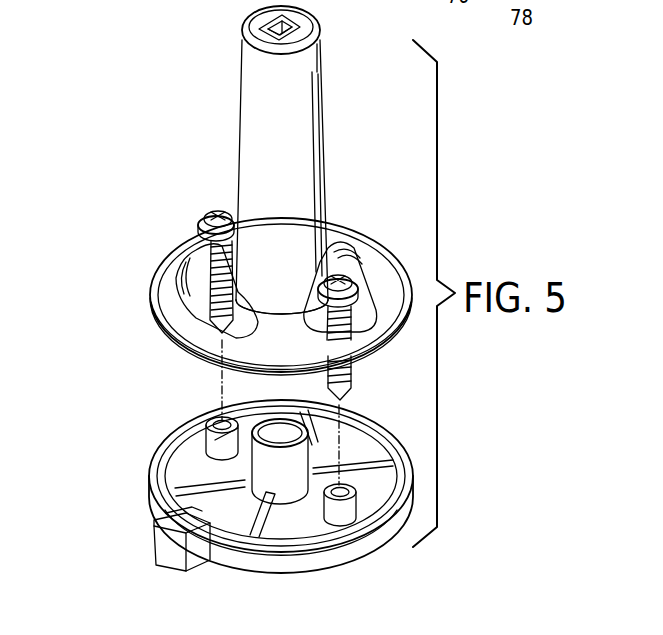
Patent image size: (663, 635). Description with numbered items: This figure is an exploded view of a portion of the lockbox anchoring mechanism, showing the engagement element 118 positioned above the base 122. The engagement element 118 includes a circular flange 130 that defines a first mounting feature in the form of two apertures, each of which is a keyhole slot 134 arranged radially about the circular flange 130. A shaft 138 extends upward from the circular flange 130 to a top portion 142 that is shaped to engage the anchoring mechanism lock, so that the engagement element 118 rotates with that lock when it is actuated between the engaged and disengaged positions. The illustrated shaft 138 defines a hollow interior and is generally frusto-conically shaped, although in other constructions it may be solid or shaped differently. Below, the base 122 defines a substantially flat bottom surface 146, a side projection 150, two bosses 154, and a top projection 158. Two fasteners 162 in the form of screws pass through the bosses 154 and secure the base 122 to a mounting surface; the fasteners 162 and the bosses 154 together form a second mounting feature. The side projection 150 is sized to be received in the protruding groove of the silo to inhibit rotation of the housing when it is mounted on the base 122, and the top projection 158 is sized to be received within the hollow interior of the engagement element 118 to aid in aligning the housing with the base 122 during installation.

The engagement element 118 is at (176, 150).
The base 122 is at (96, 497).
The circular flange 130 is at (347, 232).
The keyhole slot 134 is at (185, 283).
The shaft 138 is at (263, 128).
The top portion 142 is at (297, 20).
The bottom surface 146 is at (352, 557).
The side projection 150 is at (165, 556).
The bosses 154 is at (222, 428).
The top projection 158 is at (280, 430).
The fasteners 162 is at (212, 210).